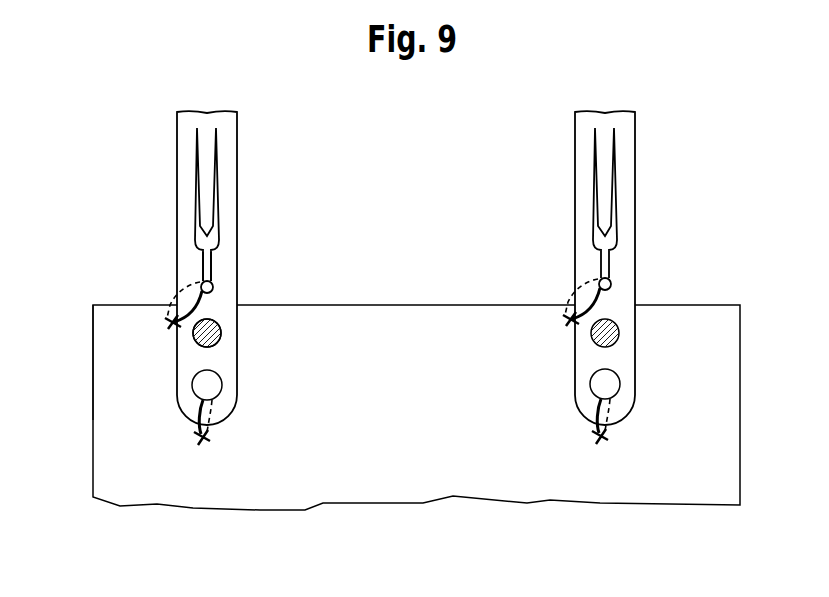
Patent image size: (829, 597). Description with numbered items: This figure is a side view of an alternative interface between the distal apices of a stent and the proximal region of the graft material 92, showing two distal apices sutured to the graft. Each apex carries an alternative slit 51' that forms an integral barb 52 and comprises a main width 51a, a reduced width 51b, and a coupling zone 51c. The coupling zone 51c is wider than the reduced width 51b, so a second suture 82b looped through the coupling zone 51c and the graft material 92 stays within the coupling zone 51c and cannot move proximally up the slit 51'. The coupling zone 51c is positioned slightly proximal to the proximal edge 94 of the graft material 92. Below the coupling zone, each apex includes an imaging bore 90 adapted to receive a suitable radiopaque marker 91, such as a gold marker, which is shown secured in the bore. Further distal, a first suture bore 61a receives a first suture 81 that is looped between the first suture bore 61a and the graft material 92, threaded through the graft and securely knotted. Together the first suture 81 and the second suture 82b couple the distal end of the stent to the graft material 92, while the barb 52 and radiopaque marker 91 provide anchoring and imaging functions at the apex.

The alternative slit 51' is at (386, 268).
The main width 51a is at (193, 163).
The barb 52 is at (210, 213).
The reduced width 51b is at (209, 262).
The coupling zone 51c is at (212, 287).
The second suture 82b is at (172, 300).
The imaging bore 90 is at (198, 344).
The radiopaque marker 91 is at (217, 338).
The first suture bore 61a is at (218, 385).
The first suture 81 is at (195, 415).
The graft material 92 is at (104, 381).
The proximal edge 94 is at (100, 322).